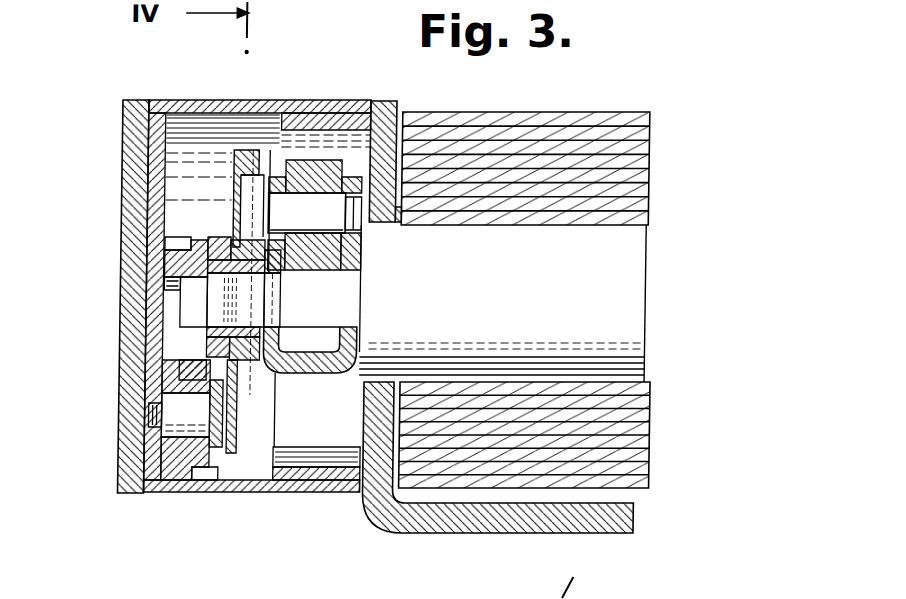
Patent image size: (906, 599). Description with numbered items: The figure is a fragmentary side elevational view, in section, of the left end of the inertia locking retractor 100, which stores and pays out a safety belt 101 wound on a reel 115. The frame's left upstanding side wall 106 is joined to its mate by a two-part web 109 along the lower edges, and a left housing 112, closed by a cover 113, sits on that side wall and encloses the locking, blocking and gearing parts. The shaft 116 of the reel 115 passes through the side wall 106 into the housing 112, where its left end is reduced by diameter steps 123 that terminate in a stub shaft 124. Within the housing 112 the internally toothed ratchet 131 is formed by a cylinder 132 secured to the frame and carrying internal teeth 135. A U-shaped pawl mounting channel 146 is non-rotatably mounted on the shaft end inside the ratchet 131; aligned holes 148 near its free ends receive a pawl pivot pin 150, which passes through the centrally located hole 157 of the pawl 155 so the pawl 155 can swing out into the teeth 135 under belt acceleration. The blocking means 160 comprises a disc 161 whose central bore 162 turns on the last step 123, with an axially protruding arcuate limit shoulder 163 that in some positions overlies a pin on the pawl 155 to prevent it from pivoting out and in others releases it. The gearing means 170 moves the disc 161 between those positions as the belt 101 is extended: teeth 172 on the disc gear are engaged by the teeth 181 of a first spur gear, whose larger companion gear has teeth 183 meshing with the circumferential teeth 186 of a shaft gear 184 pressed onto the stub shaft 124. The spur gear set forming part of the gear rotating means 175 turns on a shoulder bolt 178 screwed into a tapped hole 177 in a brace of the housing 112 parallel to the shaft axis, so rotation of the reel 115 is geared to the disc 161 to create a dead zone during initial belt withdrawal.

The inertia locking retractor 100 is at (686, 215).
The safety belt 101 is at (600, 130).
The upstanding side wall 106 is at (399, 101).
The web 109 is at (471, 525).
The left housing 112 is at (197, 100).
The cover 113 is at (128, 150).
The reel 115 is at (652, 292).
The shaft 116 is at (502, 303).
The step 123 is at (246, 295).
The stub shaft 124 is at (195, 296).
The internally toothed ratchet 131 is at (320, 111).
The cylinder 132 is at (341, 477).
The internal teeth 135 is at (300, 463).
The pawl mounting channel 146 is at (316, 363).
The aligned holes 148 is at (400, 209).
The pawl pivot pin 150 is at (315, 213).
The pawl 155 is at (355, 255).
The centrally located hole 157 is at (317, 196).
The blocking means 160 is at (254, 153).
The disc 161 is at (165, 178).
The central bore 162 is at (241, 298).
The arcuate limit shoulder 163 is at (243, 150).
The gearing means 170 is at (174, 384).
The teeth 172 is at (224, 237).
The gear rotating means 175 is at (190, 488).
The tapped hole 177 is at (181, 413).
The shoulder bolt 178 is at (162, 423).
The teeth 181 is at (220, 472).
The teeth 183 is at (196, 484).
The shaft gear 184 is at (178, 274).
The circumferential teeth 186 is at (174, 245).